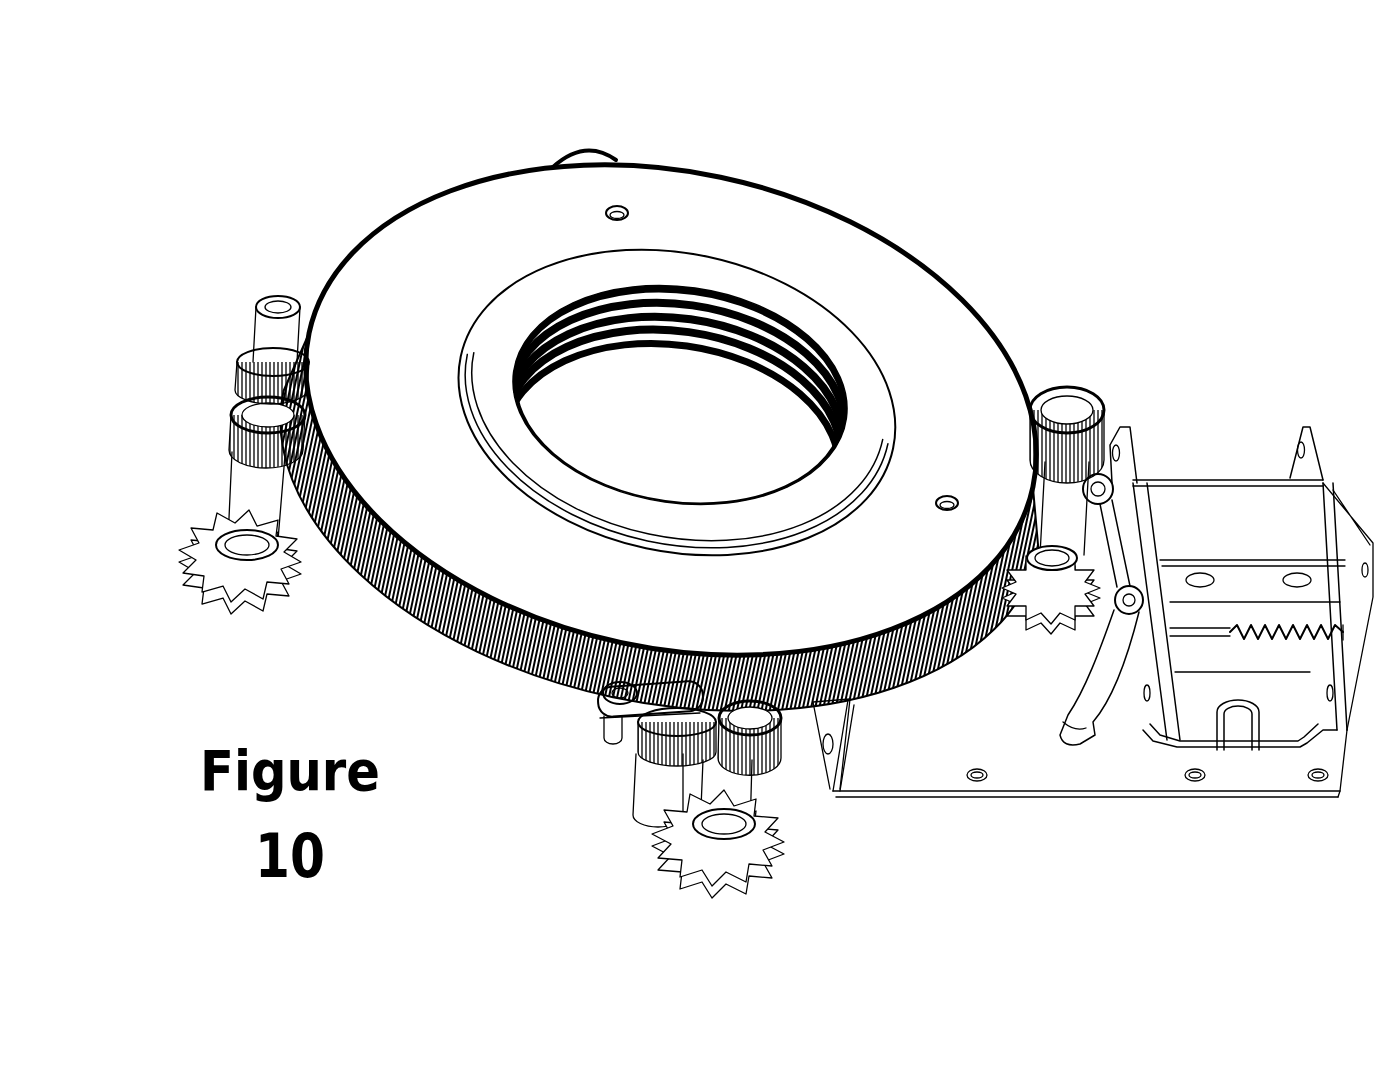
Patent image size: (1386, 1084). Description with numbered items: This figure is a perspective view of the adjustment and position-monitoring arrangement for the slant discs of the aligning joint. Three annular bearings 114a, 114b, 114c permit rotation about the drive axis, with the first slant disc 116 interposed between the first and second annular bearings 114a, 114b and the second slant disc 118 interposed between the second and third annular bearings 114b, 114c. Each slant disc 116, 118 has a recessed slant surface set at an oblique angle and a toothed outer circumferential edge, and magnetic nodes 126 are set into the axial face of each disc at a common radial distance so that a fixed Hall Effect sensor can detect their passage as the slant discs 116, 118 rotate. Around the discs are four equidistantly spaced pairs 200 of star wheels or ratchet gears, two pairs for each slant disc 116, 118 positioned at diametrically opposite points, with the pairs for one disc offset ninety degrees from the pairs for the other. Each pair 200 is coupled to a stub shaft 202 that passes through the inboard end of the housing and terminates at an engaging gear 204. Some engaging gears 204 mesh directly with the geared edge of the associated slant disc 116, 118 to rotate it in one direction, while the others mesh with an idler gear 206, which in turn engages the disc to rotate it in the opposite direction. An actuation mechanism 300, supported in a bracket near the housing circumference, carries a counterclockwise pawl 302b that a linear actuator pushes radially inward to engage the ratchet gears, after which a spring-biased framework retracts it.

The first annular bearing 114a is at (576, 353).
The second annular bearing 114b is at (747, 332).
The third annular bearing 114c is at (847, 365).
The first slant disc 116 is at (905, 695).
The second slant disc 118 is at (713, 229).
The magnetic node 126 is at (602, 206).
The pair of star wheels or ratchet gears 200 is at (1110, 903).
The stub shaft 202 is at (252, 508).
The engaging gear 204 is at (557, 157).
The idler gear 206 is at (238, 360).
The actuation mechanism 300 is at (1217, 468).
The counterclockwise pawl 302b is at (1106, 742).